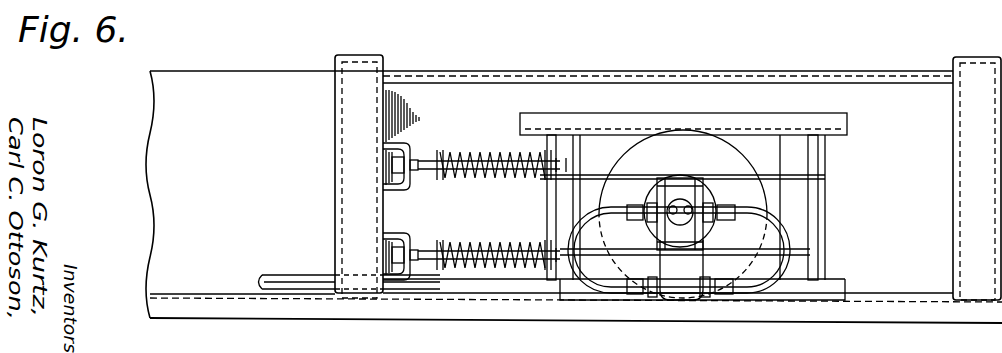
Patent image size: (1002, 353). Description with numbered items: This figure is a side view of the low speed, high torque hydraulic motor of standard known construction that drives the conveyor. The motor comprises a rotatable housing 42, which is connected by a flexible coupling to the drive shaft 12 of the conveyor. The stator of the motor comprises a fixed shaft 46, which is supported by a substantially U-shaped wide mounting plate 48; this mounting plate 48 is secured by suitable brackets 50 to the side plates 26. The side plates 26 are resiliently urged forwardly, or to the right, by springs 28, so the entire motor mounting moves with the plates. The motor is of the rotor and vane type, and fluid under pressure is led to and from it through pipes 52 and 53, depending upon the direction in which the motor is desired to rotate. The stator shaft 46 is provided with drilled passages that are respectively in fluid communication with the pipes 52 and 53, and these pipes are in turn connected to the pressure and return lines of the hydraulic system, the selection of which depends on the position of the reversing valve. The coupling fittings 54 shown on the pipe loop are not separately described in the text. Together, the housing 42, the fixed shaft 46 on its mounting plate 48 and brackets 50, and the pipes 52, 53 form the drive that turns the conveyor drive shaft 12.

The drive shaft 12 is at (693, 205).
The side plates 26 is at (600, 150).
The springs 28 is at (483, 240).
The rotatable housing 42 is at (815, 176).
The fixed shaft 46 is at (683, 200).
The mounting plate 48 is at (837, 292).
The brackets 50 is at (797, 150).
The pipe 52 is at (585, 215).
The pipe 53 is at (850, 245).
The coupling 54 is at (642, 250).